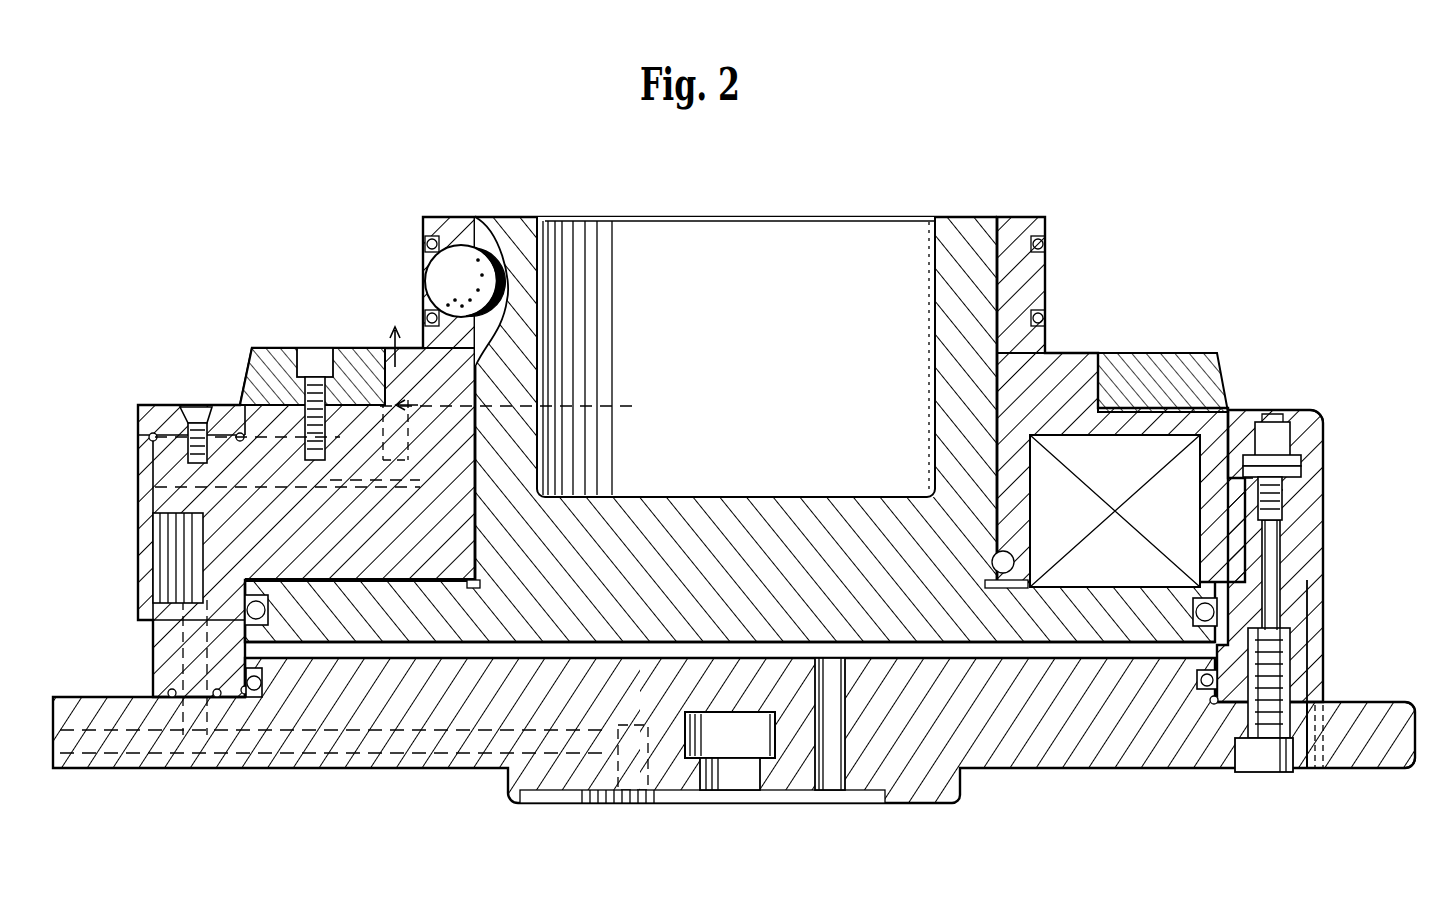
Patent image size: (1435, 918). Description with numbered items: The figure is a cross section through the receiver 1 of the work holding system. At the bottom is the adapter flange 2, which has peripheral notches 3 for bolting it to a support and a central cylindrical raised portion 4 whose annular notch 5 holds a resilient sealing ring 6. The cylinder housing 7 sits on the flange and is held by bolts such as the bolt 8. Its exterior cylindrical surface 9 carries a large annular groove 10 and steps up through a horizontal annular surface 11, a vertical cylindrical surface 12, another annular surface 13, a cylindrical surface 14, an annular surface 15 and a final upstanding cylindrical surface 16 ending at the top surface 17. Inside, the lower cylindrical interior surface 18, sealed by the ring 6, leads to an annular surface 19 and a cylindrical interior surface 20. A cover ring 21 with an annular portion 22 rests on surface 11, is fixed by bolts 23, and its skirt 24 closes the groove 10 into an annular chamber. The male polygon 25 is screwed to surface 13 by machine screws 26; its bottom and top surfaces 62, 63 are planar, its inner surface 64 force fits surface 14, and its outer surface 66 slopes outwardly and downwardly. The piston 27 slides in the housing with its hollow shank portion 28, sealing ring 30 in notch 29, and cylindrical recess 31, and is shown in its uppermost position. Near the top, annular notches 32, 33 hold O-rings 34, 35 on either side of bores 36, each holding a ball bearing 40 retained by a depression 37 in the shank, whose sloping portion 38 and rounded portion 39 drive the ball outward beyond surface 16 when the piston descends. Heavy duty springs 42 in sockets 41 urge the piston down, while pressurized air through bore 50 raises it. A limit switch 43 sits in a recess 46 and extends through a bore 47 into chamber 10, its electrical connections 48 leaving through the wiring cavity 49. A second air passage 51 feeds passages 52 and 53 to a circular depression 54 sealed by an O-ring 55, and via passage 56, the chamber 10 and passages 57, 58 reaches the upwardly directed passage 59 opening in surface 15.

The receiver 1 is at (1206, 236).
The adapter flange 2 is at (1060, 745).
The notches 3 is at (1355, 710).
The central cylindrical raised portion 4 is at (925, 670).
The annular notch 5 is at (262, 618).
The resilient sealing ring 6 is at (253, 692).
The cylinder housing 7 is at (1015, 225).
The bolt 8 is at (1262, 760).
The exterior cylindrical surface 9 is at (160, 628).
The annular groove 10 is at (175, 570).
The horizontal annular surface 11 is at (150, 432).
The vertical cylindrical surface 12 is at (195, 410).
The horizontal annular surface 13 is at (240, 402).
The cylindrical vertical surface 14 is at (315, 360).
The horizontal annular surface 15 is at (340, 348).
The upstanding cylindrical surface 16 is at (423, 230).
The annular top surface 17 is at (445, 217).
The lower cylindrical interior surface 18 is at (152, 610).
The annular horizontal surface 19 is at (297, 575).
The vertical cylindrical interior surface 20 is at (475, 522).
The cover ring 21 is at (138, 460).
The annular portion 22 is at (145, 405).
The bolts 23 is at (152, 407).
The annular skirt 24 is at (148, 545).
The male polygon 25 is at (268, 355).
The machine screws 26 is at (290, 348).
The piston 27 is at (770, 621).
The cylindrical shank portion 28 is at (770, 551).
The annular peripheral notch 29 is at (285, 628).
The sealing ring 30 is at (305, 628).
The cylindrical recess 31 is at (768, 316).
The annular notch 32 is at (456, 235).
The annular notch 33 is at (428, 328).
The O-ring 34 is at (426, 248).
The O-ring 35 is at (428, 316).
The bores 36 is at (460, 322).
The depression 37 is at (540, 330).
The downwardly and inwardly sloping portion 38 is at (510, 300).
The rounded portion 39 is at (545, 365).
The ball bearing 40 is at (468, 282).
The cylindrical socket 41 is at (1015, 485).
The heavy duty spring 42 is at (1080, 548).
The limit switch 43 is at (1285, 480).
The recess 46 is at (1298, 452).
The bore 47 is at (1283, 500).
The electrical connections 48 is at (1270, 575).
The wiring cavity 49 is at (735, 770).
The bore 50 is at (838, 745).
The second pressurized air passage 51 is at (610, 770).
The passage 52 is at (490, 745).
The passage 53 is at (187, 717).
The circular depression 54 is at (152, 680).
The O-ring 55 is at (150, 685).
The passage 56 is at (165, 650).
The passage 57 is at (170, 500).
The passage 58 is at (338, 503).
The upwardly directed passage 59 is at (528, 405).
The planar bottom surface 62 is at (282, 385).
The planar top surface 63 is at (247, 348).
The cylindrical inner surface 64 is at (408, 408).
The outer surface 66 is at (282, 397).